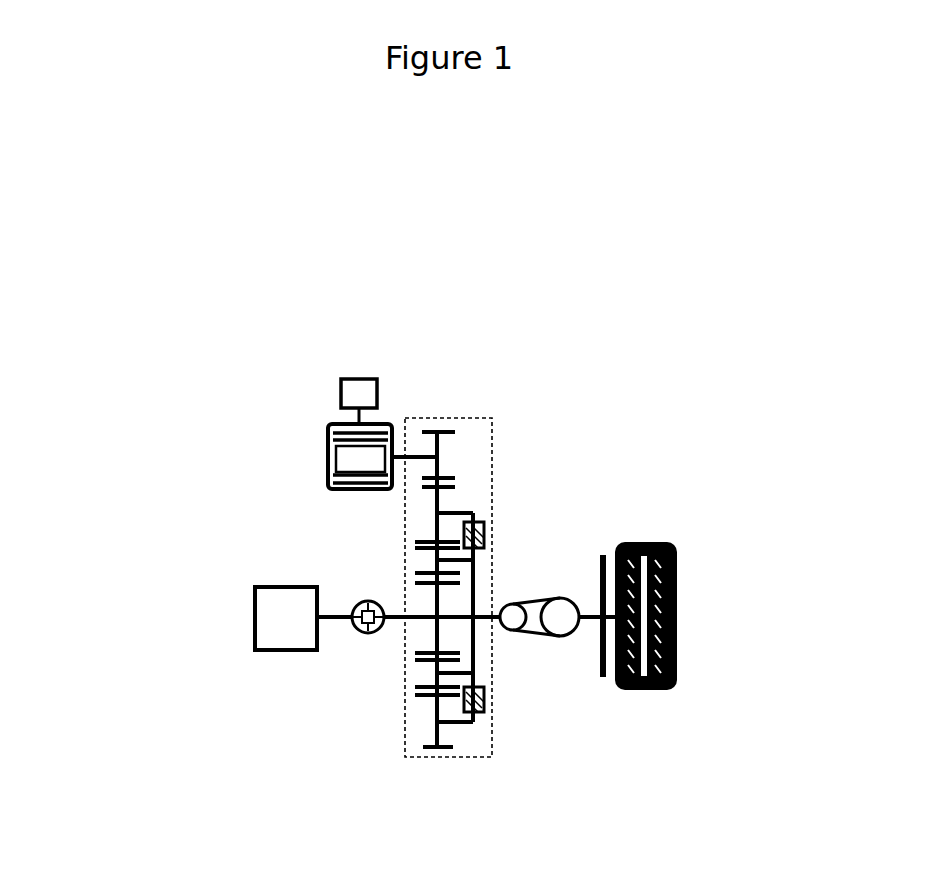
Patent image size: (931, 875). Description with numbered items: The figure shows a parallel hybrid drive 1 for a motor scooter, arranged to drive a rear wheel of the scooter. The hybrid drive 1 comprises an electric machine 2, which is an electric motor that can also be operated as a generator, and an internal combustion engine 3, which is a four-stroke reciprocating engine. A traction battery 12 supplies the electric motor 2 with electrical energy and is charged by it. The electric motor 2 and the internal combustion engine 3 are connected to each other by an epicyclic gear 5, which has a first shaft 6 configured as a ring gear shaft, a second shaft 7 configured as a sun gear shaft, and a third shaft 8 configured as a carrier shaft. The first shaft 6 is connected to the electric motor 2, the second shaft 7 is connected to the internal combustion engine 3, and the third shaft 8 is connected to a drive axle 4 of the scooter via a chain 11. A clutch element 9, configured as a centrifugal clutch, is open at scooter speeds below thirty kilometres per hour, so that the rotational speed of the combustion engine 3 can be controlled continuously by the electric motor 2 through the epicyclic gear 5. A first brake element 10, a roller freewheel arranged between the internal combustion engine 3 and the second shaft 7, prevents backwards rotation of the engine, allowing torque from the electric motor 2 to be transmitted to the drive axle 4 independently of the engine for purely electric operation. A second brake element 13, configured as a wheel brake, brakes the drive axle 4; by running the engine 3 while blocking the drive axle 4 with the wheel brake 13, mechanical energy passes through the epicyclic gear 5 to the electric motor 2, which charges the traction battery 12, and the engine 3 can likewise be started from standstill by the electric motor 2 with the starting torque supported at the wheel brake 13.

The parallel hybrid drive 1 is at (450, 347).
The electric machine 2 is at (327, 457).
The internal combustion engine 3 is at (250, 617).
The drive axle 4 is at (583, 637).
The epicyclic gear 5 is at (496, 427).
The first shaft 6 is at (437, 457).
The second shaft 7 is at (435, 620).
The third shaft 8 is at (437, 673).
The clutch element 9 is at (488, 533).
The first brake element 10 is at (372, 600).
The chain 11 is at (541, 633).
The traction battery 12 is at (340, 393).
The second brake element 13 is at (602, 678).